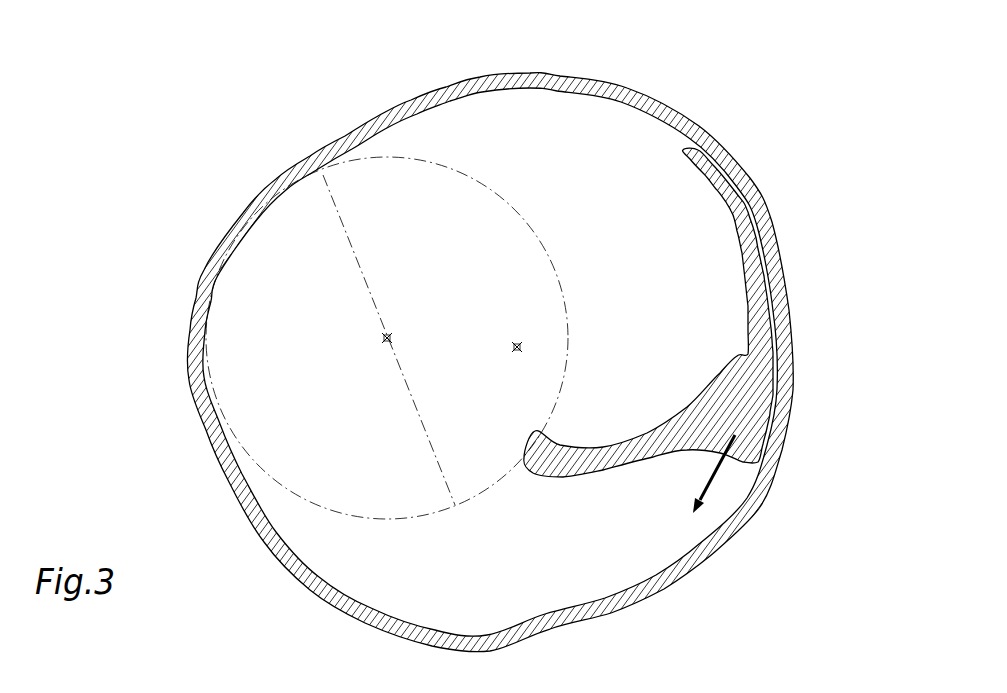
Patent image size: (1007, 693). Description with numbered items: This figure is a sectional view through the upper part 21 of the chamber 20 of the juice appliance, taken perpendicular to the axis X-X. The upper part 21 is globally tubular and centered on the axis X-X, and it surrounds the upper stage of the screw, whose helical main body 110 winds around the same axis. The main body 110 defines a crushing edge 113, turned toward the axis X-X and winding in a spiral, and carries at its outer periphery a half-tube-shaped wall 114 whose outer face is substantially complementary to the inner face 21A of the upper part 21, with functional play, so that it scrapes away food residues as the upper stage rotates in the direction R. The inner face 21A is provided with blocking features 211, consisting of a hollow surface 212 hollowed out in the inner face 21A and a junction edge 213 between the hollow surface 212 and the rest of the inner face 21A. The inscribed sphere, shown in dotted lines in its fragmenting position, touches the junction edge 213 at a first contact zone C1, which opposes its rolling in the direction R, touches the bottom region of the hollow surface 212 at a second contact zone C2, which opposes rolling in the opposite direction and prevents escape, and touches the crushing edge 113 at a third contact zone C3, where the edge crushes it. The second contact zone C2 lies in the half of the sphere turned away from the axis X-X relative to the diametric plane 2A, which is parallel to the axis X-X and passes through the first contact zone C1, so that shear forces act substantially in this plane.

The chamber 20 is at (262, 568).
The upper part 21 is at (663, 589).
The inner face 21A is at (612, 117).
The blocking features 211 is at (92, 303).
The hollow surface 212 is at (212, 307).
The junction edge 213 is at (325, 173).
The diametric plane 2A is at (262, 194).
The main body 110 is at (738, 415).
The wall 114 is at (760, 205).
The crushing edge 113 is at (535, 433).
The second contact zone C2 is at (228, 287).
The axis X-X is at (519, 333).
The first contact zone C1 is at (345, 175).
The third contact zone C3 is at (513, 428).
The rotation direction R is at (710, 474).